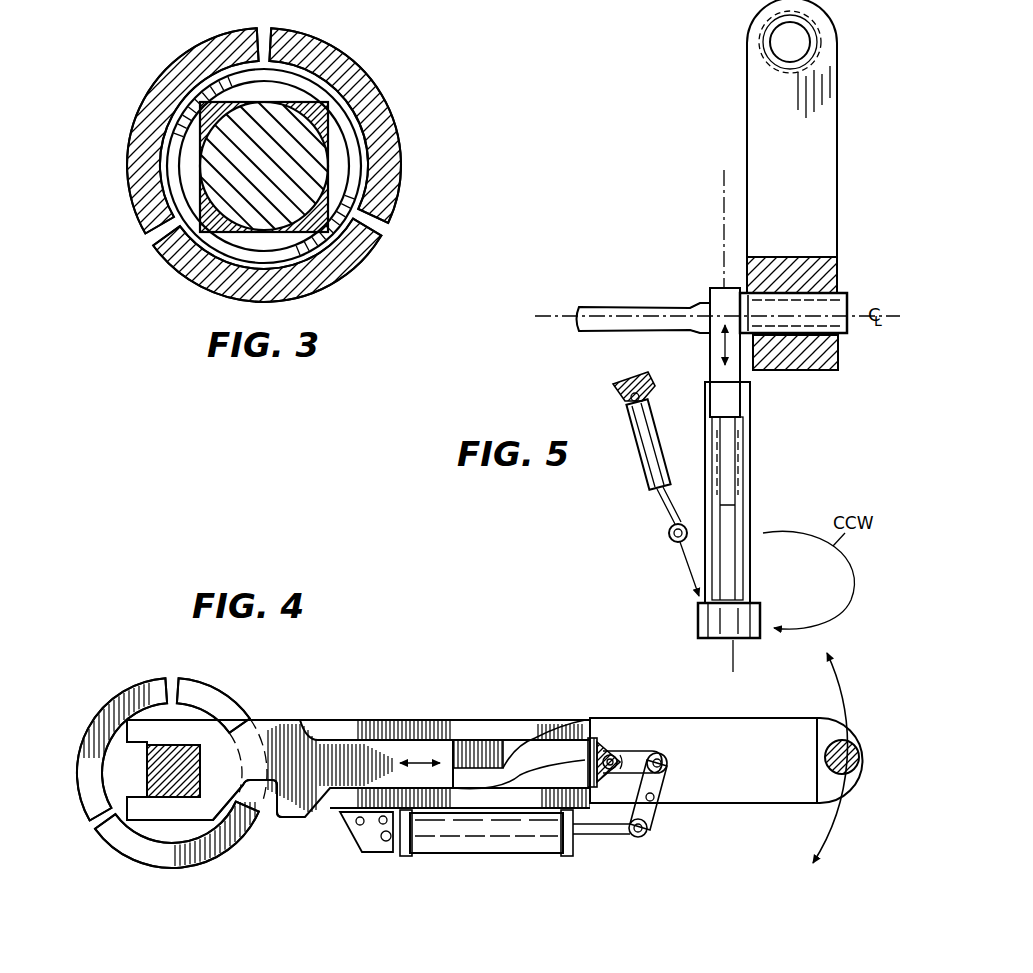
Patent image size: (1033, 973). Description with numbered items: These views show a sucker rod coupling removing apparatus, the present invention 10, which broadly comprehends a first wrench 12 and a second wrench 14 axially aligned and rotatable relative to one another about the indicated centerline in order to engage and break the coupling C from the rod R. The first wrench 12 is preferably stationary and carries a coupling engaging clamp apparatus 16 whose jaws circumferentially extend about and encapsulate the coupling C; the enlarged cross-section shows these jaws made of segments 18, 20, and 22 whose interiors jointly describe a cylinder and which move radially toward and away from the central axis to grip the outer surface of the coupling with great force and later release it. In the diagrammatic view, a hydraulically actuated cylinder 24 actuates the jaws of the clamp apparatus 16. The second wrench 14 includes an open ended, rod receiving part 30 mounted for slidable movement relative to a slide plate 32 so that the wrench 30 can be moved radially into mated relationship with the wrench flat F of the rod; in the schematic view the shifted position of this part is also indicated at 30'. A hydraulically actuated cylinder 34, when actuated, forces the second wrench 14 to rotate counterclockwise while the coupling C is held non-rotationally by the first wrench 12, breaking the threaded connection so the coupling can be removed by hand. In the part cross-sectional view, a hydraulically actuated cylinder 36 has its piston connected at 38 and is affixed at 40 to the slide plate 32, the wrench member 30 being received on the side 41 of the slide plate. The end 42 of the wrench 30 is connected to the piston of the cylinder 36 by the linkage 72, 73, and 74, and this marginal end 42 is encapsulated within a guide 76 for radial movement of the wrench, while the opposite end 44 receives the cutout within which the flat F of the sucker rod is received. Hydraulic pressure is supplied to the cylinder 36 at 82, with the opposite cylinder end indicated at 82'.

In FIG. 5, the present invention 10 is at (714, 206).
In FIG. 5, the first wrench 12 is at (840, 207).
In FIG. 5, the second wrench 14 is at (754, 478).
In FIG. 4, the second wrench 14 is at (506, 704).
In FIG. 3, the coupling engaging clamp apparatus 16 is at (178, 296).
In FIG. 5, the coupling engaging clamp apparatus 16 is at (843, 261).
In FIG. 4, the coupling engaging clamp apparatus 16 is at (113, 684).
In FIG. 3, the segment 18 is at (350, 272).
In FIG. 4, the segment 18 is at (215, 858).
In FIG. 3, the segment 20 is at (345, 68).
In FIG. 4, the segment 20 is at (250, 706).
In FIG. 3, the segment 22 is at (172, 75).
In FIG. 4, the segment 22 is at (140, 680).
In FIG. 5, the hydraulically actuated cylinder 24 is at (822, 63).
In FIG. 5, the open ended rod receiving part 30 is at (710, 330).
In FIG. 4, the open ended rod receiving part 30 is at (315, 807).
In FIG. 5, the inner shaft 30' is at (758, 508).
In FIG. 5, the slide plate 32 is at (752, 566).
In FIG. 4, the slide plate 32 is at (628, 718).
In FIG. 5, the hydraulically actuated cylinder 34 is at (636, 462).
In FIG. 4, the hydraulically actuated cylinder 34 is at (843, 673).
In FIG. 4, the hydraulically actuated cylinder 36 is at (453, 856).
In FIG. 4, the piston connection 38 is at (646, 836).
In FIG. 4, the cylinder attachment 40 is at (378, 855).
In FIG. 4, the side of the slide plate 41 is at (613, 793).
In FIG. 4, the end of the open ended wrench 42 is at (604, 745).
In FIG. 4, the end of the wrench 44 is at (118, 737).
In FIG. 4, the linkage 72 is at (665, 786).
In FIG. 4, the linkage 73 is at (655, 808).
In FIG. 4, the linkage 74 is at (665, 756).
In FIG. 4, the guide 76 is at (570, 712).
In FIG. 4, the hydraulic pressure supply 82 is at (407, 853).
In FIG. 4, the cylinder end cap 82' is at (548, 851).
In FIG. 3, the coupling C is at (342, 101).
In FIG. 5, the coupling C is at (793, 313).
In FIG. 4, the coupling C is at (190, 712).
In FIG. 3, the rod R is at (312, 150).
In FIG. 5, the rod R is at (622, 307).
In FIG. 3, the wrench flat F is at (332, 186).
In FIG. 5, the wrench flat F is at (700, 304).
In FIG. 4, the wrench flat F is at (146, 768).